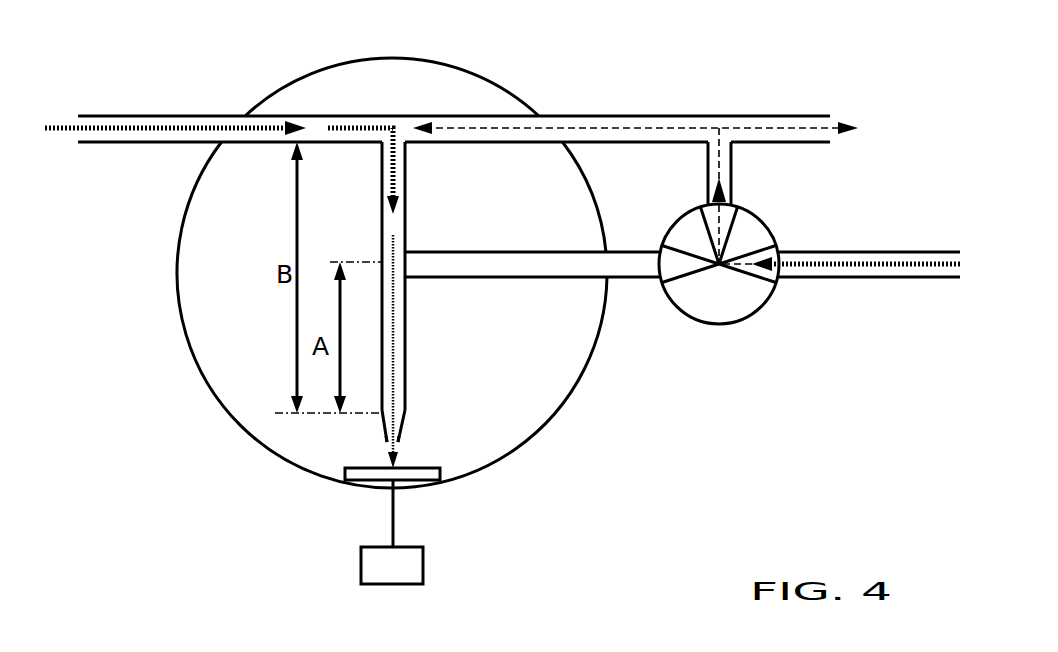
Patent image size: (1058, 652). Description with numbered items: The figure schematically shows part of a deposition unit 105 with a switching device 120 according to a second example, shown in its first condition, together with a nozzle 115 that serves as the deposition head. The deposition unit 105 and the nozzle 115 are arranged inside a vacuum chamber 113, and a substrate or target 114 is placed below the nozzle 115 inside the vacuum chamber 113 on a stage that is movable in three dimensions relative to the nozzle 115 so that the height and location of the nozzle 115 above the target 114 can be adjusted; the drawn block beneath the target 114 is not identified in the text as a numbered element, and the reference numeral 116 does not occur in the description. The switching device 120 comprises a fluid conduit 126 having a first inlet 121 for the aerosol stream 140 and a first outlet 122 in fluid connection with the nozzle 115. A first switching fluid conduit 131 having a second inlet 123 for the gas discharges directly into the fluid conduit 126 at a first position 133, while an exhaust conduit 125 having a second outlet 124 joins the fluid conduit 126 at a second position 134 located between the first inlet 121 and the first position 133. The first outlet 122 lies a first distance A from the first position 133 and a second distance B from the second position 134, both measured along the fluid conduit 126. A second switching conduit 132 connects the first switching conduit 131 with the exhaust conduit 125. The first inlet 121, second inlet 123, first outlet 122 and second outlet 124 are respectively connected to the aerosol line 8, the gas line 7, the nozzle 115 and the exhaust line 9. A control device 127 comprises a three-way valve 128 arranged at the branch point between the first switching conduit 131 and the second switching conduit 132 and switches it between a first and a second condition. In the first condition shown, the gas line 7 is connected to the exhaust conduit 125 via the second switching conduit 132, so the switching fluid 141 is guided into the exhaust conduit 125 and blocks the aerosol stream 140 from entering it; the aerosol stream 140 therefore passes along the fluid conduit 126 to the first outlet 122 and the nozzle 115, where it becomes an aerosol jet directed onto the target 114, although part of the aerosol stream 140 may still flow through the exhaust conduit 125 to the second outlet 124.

The gas line 7 is at (920, 250).
The aerosol line 8 is at (108, 116).
The exhaust line 9 is at (773, 117).
The deposition unit 105 is at (643, 437).
The vacuum chamber 113 is at (222, 410).
The target 114 is at (425, 478).
The nozzle 115 is at (400, 440).
The drive unit 116 is at (425, 565).
The switching device 120 is at (505, 292).
The first inlet 121 is at (165, 128).
The first outlet 122 is at (405, 402).
The second inlet 123 is at (925, 278).
The second outlet 124 is at (745, 128).
The exhaust conduit 125 is at (583, 116).
The fluid conduit 126 is at (135, 143).
The control device 127 is at (683, 320).
The valve 128 is at (736, 272).
The first switching fluid conduit 131 is at (632, 277).
The second switching conduit 132 is at (735, 195).
The first position 133 is at (383, 258).
The second position 134 is at (401, 128).
The aerosol stream 140 is at (281, 127).
The switching fluid 141 is at (813, 117).